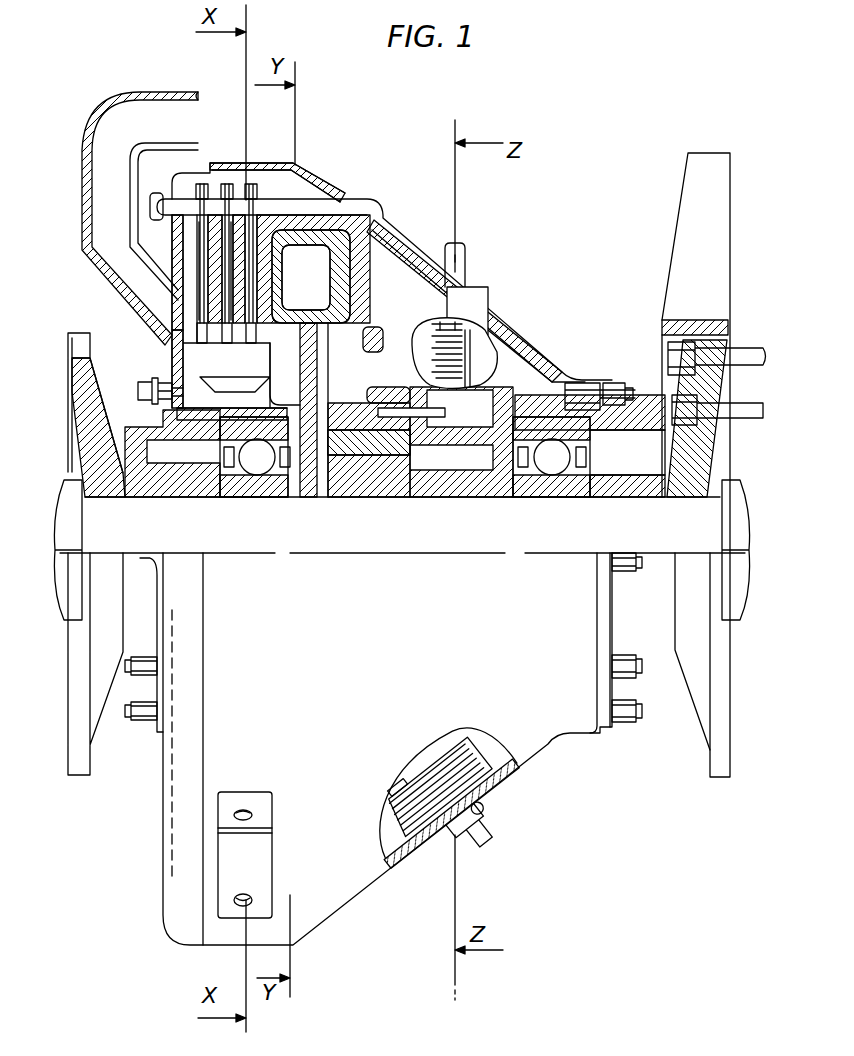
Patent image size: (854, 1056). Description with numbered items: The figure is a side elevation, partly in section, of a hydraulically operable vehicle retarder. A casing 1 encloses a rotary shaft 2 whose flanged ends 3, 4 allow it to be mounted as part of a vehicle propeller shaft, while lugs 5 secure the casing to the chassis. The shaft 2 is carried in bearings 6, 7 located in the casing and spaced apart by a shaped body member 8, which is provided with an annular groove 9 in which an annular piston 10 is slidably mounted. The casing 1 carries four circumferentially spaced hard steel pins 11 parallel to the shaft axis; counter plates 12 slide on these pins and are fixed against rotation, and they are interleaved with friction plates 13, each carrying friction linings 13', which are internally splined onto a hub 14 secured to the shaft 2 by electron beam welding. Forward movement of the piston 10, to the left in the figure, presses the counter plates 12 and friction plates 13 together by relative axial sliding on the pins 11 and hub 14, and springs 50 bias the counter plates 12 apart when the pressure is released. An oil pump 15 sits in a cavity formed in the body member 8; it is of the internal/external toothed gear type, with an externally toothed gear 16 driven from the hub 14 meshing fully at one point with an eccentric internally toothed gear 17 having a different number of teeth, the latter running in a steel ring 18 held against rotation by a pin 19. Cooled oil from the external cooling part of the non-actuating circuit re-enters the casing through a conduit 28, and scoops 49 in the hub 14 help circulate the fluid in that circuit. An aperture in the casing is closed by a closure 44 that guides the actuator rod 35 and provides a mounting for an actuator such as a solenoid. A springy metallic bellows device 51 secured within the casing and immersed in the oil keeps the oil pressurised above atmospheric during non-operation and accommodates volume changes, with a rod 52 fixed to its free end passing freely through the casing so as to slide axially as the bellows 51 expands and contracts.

The casing 1 is at (165, 790).
The shaft 2 is at (143, 538).
The flanged end 3 is at (68, 423).
The flanged end 4 is at (710, 770).
The lug 5 is at (258, 872).
The bearing 6 is at (256, 462).
The bearing 7 is at (560, 457).
The shaped body member 8 is at (530, 398).
The annular groove 9 is at (320, 279).
The annular piston 10 is at (322, 318).
The hard steel pin 11 is at (330, 205).
The counter plate 12 is at (258, 190).
The friction plate 13 is at (200, 311).
The friction lining 13' is at (173, 271).
The hub 14 is at (237, 358).
The oil pump 15 is at (350, 500).
The externally toothed gear 16 is at (392, 500).
The eccentric internally toothed gear 17 is at (350, 440).
The steel ring 18 is at (362, 387).
The pin 19 is at (446, 413).
The conduit 28 is at (140, 97).
The actuator rod 35 is at (466, 262).
The closure 44 is at (489, 300).
The scoop 49 is at (283, 345).
The spring 50 is at (226, 184).
The metallic bellows device 51 is at (483, 772).
The rod 52 is at (490, 854).